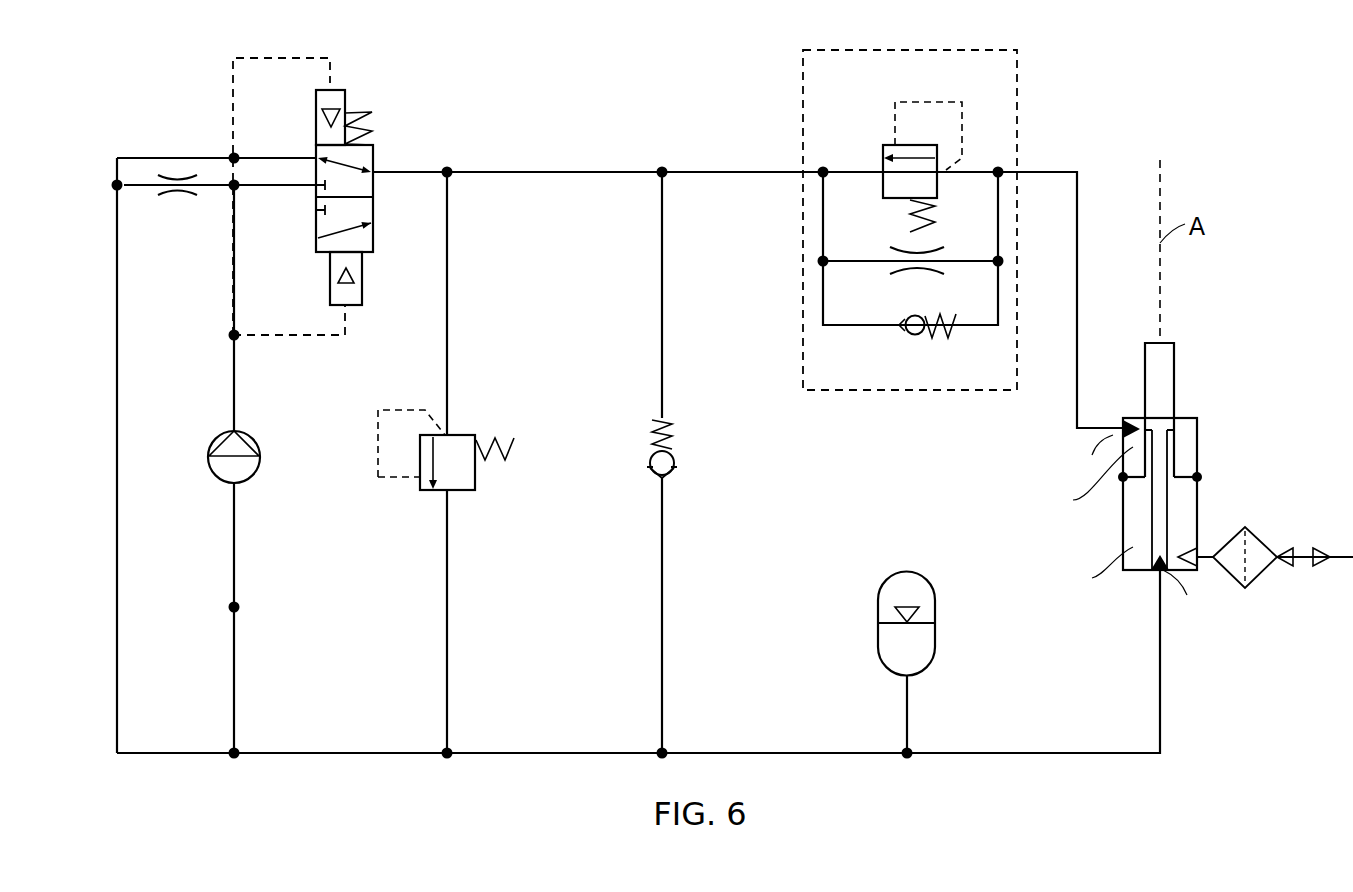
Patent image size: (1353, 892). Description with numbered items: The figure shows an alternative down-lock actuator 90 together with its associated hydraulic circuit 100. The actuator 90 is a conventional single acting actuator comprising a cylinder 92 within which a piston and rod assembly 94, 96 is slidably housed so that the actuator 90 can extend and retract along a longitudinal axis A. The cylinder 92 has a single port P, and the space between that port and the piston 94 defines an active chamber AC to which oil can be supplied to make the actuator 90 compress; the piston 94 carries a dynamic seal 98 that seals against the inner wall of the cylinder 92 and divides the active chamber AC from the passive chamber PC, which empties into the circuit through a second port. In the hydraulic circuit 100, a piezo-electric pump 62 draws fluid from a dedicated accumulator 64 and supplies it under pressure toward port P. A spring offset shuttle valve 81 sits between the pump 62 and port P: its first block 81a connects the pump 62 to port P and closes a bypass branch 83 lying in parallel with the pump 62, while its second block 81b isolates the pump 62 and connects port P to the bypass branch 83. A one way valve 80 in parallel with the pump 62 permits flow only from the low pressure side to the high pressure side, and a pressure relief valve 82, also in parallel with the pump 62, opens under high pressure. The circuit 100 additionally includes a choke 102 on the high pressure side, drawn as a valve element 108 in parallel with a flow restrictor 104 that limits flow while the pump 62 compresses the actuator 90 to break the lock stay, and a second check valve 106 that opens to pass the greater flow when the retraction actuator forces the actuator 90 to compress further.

The piezo-electric pump 62 is at (257, 438).
The accumulator 64 is at (935, 612).
The one way valve 80 is at (675, 455).
The spring offset shuttle valve 81 is at (377, 196).
The first block 81a is at (373, 233).
The second block 81b is at (373, 177).
The pressure relief valve 82 is at (475, 478).
The bypass branch 83 is at (114, 370).
The down-lock actuator 90 is at (1199, 484).
The cylinder 92 is at (1198, 530).
The piston 94 is at (1197, 487).
The rod 96 is at (1176, 397).
The dynamic seal 98 is at (1122, 478).
The hydraulic circuit 100 is at (1132, 106).
The choke 102 is at (954, 220).
The flow restrictor 104 is at (917, 269).
The second check valve 106 is at (932, 335).
The pressure control valve 108 is at (893, 142).